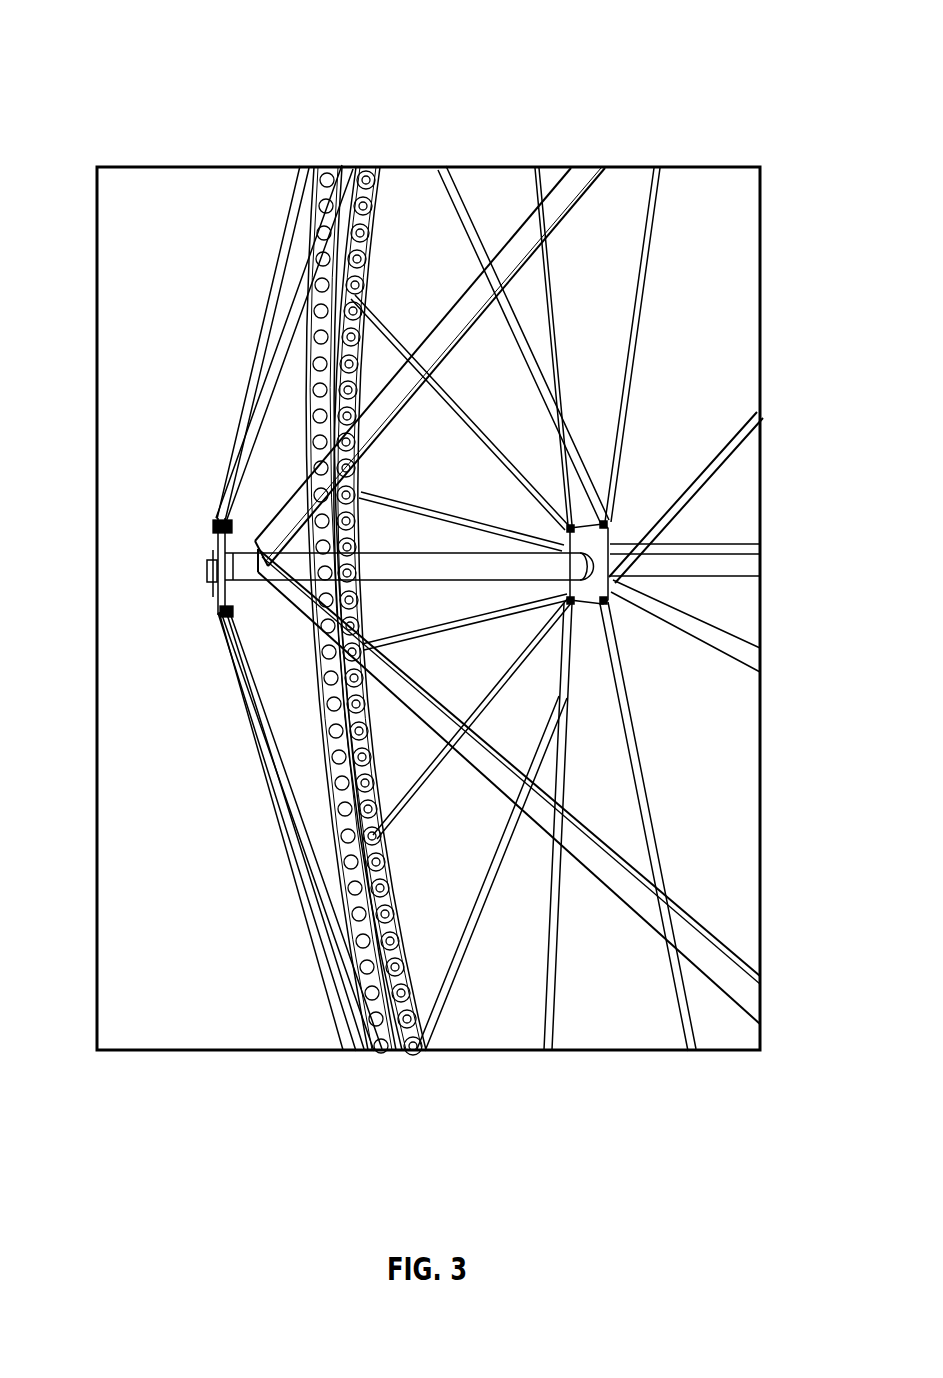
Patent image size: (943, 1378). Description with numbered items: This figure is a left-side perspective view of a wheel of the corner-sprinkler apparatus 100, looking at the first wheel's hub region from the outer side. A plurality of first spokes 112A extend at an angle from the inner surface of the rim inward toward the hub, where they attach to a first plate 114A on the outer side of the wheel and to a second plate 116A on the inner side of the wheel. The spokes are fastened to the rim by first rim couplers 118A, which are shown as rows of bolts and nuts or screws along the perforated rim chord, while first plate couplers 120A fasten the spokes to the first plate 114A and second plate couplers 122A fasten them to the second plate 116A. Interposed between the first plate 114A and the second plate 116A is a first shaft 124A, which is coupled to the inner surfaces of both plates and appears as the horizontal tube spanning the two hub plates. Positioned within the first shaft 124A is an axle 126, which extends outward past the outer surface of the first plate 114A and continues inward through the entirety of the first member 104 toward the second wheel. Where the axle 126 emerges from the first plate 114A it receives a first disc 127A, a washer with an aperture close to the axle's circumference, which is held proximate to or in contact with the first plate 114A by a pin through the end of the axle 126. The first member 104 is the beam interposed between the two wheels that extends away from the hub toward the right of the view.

The corner-sprinkler apparatus 100 is at (134, 34).
The first rim couplers 118A is at (350, 257).
The first shaft 124A is at (215, 522).
The first plate 114A is at (210, 557).
The axle 126 is at (208, 566).
The first disc 127A is at (217, 590).
The first plate couplers 120A is at (220, 614).
The second plate couplers 122A is at (622, 515).
The second plate 116A is at (628, 540).
The first member 104 is at (730, 558).
The first spokes 112A is at (640, 878).